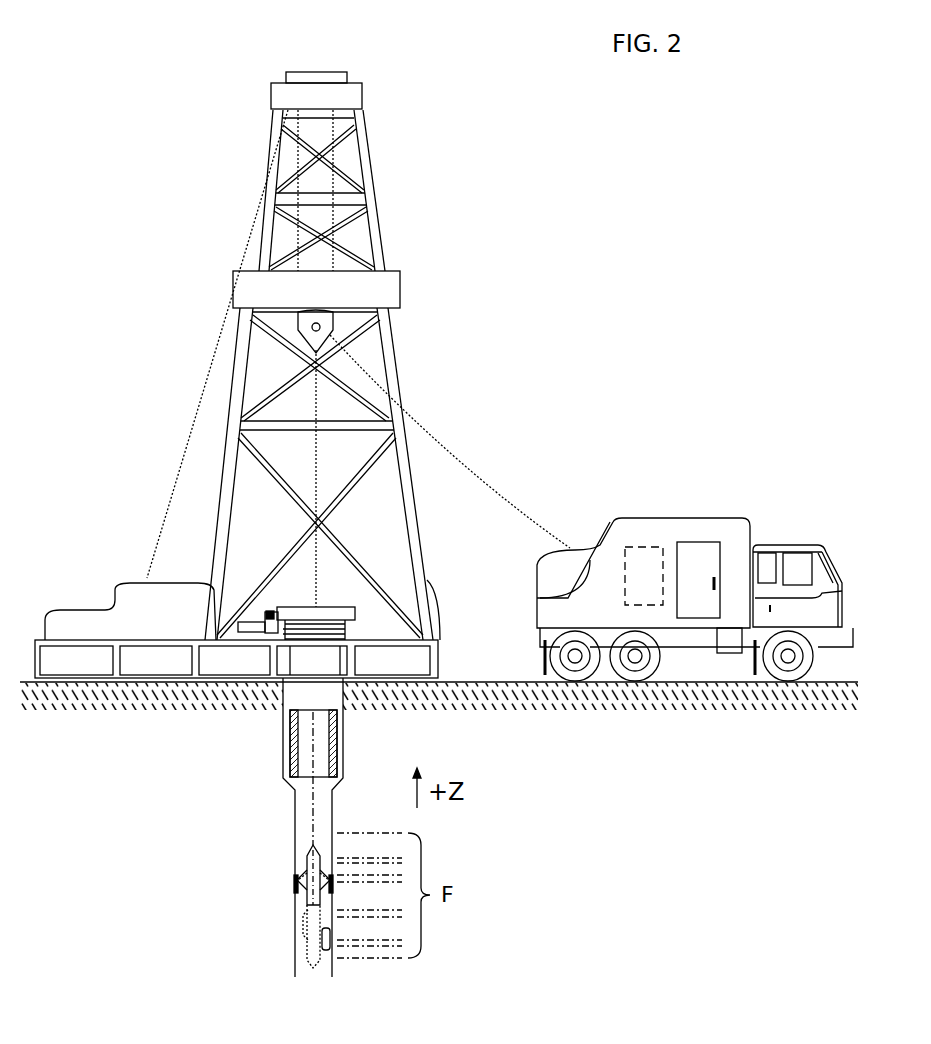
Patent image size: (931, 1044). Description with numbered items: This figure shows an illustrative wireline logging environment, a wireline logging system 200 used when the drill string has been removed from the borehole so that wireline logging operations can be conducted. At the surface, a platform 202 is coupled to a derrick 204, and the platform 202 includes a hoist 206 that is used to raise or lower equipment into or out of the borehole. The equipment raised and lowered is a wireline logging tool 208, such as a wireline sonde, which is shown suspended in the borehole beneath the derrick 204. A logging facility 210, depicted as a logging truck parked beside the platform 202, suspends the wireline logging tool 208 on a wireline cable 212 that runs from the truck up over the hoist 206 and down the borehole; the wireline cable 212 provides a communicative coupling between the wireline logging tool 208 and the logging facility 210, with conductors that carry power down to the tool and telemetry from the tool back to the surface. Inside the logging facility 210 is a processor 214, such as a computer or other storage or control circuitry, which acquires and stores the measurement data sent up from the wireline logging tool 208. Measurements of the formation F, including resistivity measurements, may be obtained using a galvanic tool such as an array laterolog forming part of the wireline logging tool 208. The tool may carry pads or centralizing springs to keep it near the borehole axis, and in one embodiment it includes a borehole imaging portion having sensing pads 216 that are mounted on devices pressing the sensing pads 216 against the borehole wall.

The wireline logging system 200 is at (153, 200).
The platform 202 is at (440, 655).
The derrick 204 is at (428, 606).
The hoist 206 is at (321, 320).
The wireline logging tool 208 is at (306, 862).
The logging facility 210 is at (710, 527).
The wireline cable 212 is at (458, 455).
The processor 214 is at (630, 548).
The sensing pads 216 is at (312, 888).